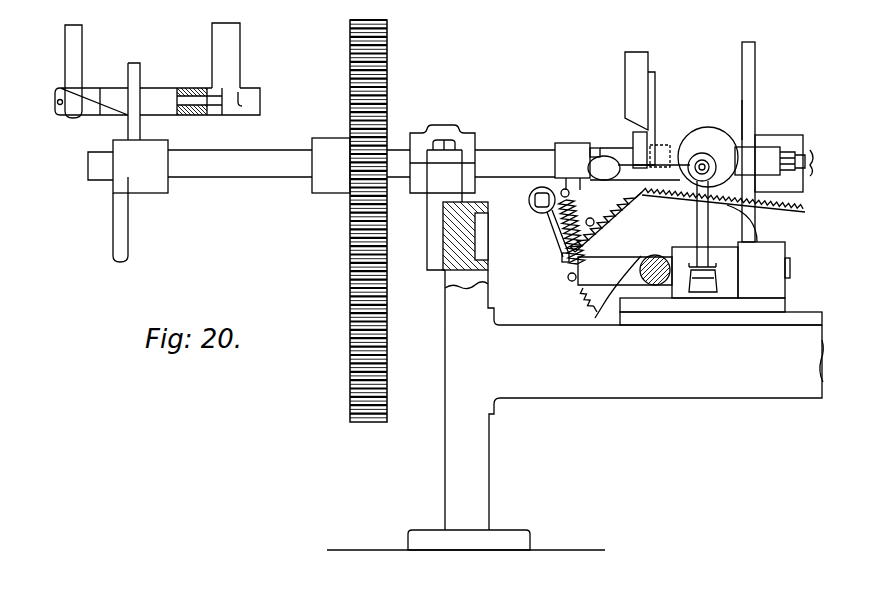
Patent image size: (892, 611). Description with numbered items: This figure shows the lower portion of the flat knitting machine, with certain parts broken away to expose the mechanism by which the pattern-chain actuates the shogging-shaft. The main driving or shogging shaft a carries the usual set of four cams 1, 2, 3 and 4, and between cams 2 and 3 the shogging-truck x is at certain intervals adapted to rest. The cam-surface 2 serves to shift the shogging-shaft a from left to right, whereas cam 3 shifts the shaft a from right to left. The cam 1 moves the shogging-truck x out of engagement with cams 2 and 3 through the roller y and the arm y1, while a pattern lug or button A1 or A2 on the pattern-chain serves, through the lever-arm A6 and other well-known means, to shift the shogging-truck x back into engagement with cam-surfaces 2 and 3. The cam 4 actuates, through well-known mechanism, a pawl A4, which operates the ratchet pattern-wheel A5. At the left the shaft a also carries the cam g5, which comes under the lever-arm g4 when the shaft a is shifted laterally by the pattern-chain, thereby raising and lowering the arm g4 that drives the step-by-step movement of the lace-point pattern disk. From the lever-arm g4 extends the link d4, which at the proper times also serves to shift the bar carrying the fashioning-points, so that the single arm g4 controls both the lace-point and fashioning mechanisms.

The link d4 is at (82, 42).
The lever-arm g4 is at (197, 76).
The cam g5 is at (128, 253).
The shaft a is at (93, 170).
The cam 4 is at (625, 62).
The cam 3 is at (660, 140).
The cam 2 is at (745, 110).
The cam 1 is at (756, 60).
The shogging-truck x is at (707, 131).
The roller y is at (755, 155).
The arm y1 is at (764, 270).
The lever-arm A6 is at (627, 172).
The pawl A4 is at (563, 243).
The ratchet pattern-wheel A5 is at (583, 298).
The pattern button A2 is at (632, 271).
The pattern lug or button A1 is at (647, 218).